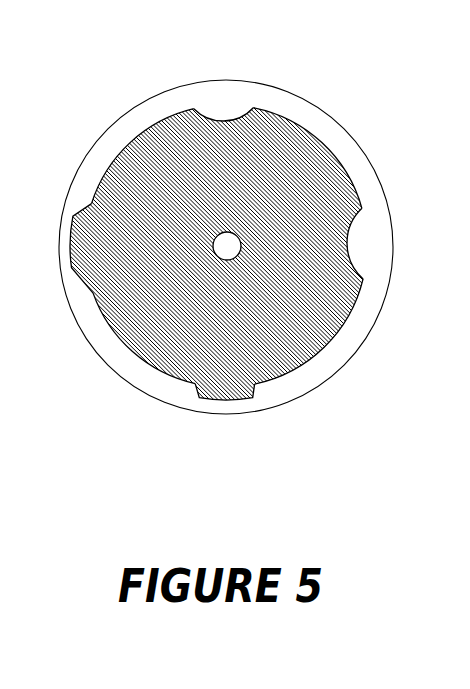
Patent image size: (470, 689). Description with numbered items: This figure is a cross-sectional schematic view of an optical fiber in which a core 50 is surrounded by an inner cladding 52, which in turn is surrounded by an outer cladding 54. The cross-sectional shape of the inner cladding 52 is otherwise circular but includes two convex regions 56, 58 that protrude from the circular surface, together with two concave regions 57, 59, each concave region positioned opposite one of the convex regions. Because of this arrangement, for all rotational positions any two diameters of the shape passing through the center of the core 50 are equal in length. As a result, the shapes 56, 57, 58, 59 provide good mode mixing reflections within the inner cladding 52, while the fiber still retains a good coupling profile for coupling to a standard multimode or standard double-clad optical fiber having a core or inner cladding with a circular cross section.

The core 50 is at (237, 239).
The inner cladding 52 is at (354, 300).
The outer cladding 54 is at (335, 355).
The convex region 56 is at (259, 387).
The concave region 57 is at (237, 113).
The convex region 58 is at (77, 267).
The concave region 59 is at (355, 225).